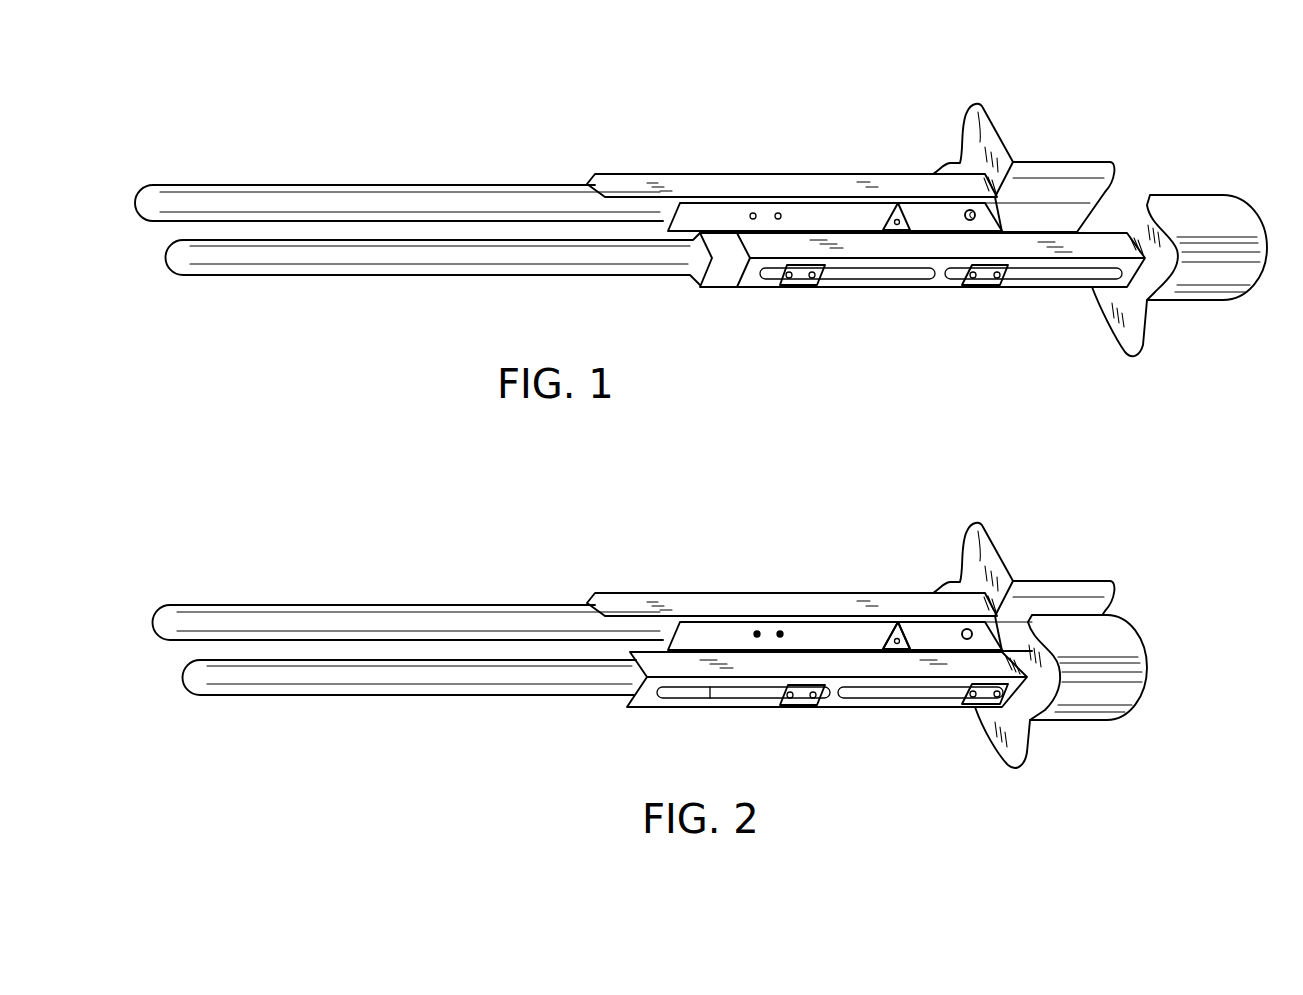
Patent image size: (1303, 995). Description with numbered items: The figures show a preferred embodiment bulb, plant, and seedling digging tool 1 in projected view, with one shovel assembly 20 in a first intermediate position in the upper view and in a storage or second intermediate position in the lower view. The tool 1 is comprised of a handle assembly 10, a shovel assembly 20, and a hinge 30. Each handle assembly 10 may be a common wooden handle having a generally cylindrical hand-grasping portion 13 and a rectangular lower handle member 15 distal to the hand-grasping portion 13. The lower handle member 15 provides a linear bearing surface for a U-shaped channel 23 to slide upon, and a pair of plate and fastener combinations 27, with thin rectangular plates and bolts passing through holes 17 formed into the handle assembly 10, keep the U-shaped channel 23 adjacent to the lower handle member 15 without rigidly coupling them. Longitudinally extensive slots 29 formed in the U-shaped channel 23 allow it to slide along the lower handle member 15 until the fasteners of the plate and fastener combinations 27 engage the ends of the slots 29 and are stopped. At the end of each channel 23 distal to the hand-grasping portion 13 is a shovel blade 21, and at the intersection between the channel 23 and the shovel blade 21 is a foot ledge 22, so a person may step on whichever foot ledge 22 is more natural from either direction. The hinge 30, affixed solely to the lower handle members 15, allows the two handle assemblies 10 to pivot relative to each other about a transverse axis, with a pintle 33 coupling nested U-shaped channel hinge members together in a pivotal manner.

In FIG. 1, the bulb, plant, and seedling digging tool 1 is at (1187, 97).
In FIG. 2, the bulb, plant, and seedling digging tool 1 is at (1088, 525).
In FIG. 1, the handle assembly 10 is at (262, 285).
In FIG. 2, the handle assembly 10 is at (292, 700).
In FIG. 1, the hand-grasping portion 13 is at (372, 263).
In FIG. 1, the rectangular lower handle member 15 is at (718, 273).
In FIG. 1, the holes 17 is at (775, 212).
In FIG. 1, the shovel assembly 20 is at (857, 292).
In FIG. 2, the shovel assembly 20 is at (877, 711).
In FIG. 1, the shovel blade 21 is at (1050, 178).
In FIG. 1, the foot ledge 22 is at (980, 105).
In FIG. 1, the U-shaped channel 23 is at (640, 177).
In FIG. 1, the plate and fastener combinations 27 is at (803, 281).
In FIG. 1, the longitudinally extensive slots 29 is at (912, 272).
In FIG. 1, the hinge 30 is at (919, 215).
In FIG. 2, the hinge 30 is at (934, 633).
In FIG. 1, the pintle 33 is at (945, 208).